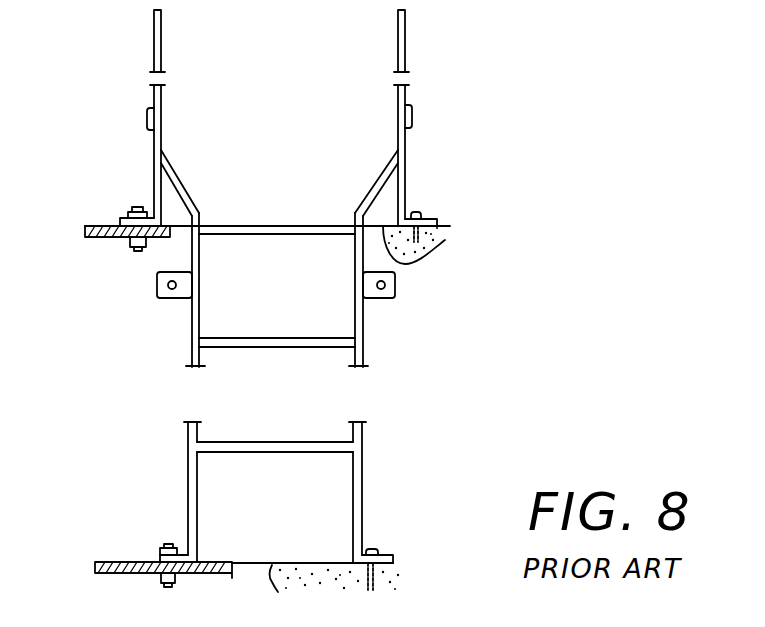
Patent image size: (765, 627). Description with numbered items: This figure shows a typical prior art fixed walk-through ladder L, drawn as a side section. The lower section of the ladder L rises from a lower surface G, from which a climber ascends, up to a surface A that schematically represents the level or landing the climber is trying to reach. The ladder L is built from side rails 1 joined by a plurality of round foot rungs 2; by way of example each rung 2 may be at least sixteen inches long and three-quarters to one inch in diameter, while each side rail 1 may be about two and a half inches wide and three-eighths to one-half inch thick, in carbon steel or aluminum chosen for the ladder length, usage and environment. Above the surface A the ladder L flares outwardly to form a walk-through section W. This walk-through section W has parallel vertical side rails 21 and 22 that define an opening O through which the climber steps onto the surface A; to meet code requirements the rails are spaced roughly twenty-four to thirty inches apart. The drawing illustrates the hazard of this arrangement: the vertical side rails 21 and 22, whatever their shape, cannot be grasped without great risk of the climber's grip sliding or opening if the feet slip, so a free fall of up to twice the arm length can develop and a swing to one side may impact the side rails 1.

The walk-through section W is at (146, 44).
The opening O is at (300, 126).
The vertical side rail 21 is at (153, 183).
The vertical side rail 22 is at (405, 180).
The surface A is at (445, 240).
The side rail 1 is at (190, 330).
The foot rung 2 is at (312, 349).
The ladder L is at (182, 492).
The lower surface G is at (393, 563).